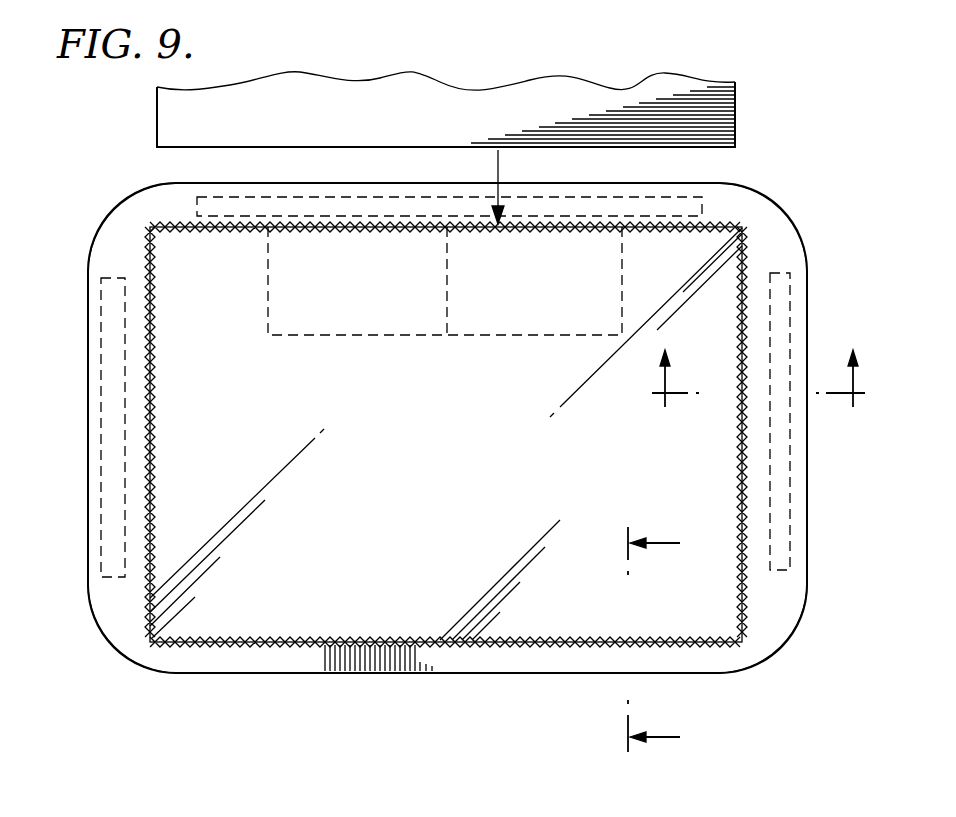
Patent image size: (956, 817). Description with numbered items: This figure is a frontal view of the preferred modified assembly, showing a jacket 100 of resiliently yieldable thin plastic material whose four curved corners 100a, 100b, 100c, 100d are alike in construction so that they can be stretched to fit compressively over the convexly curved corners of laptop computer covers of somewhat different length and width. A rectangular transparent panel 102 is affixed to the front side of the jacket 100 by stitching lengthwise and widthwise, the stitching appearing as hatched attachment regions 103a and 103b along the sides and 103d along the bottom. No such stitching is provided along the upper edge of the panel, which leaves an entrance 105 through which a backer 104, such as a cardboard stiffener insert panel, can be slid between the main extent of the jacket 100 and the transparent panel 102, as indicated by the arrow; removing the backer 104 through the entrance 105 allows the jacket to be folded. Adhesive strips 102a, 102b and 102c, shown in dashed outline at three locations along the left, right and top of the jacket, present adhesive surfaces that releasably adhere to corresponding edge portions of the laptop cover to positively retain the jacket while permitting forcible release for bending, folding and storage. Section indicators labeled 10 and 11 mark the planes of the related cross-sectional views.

The jacket 100 is at (335, 674).
The curved corner of jacket 100a is at (778, 215).
The curved corner of jacket 100b is at (118, 215).
The curved corner of jacket 100c is at (762, 653).
The curved corner of jacket 100d is at (133, 657).
The rectangular transparent panel 102 is at (446, 434).
The adhesive strip 102a is at (103, 350).
The adhesive strip 102b is at (790, 470).
The adhesive strip 102c is at (328, 203).
The stitching attachment 103a is at (150, 450).
The stitching attachment 103b is at (740, 470).
The stitching attachment 103d is at (478, 648).
The backer 104 is at (615, 110).
The entrance 105 is at (437, 222).
The section line 10- 10 is at (631, 640).
The section line 11- 11 is at (759, 393).